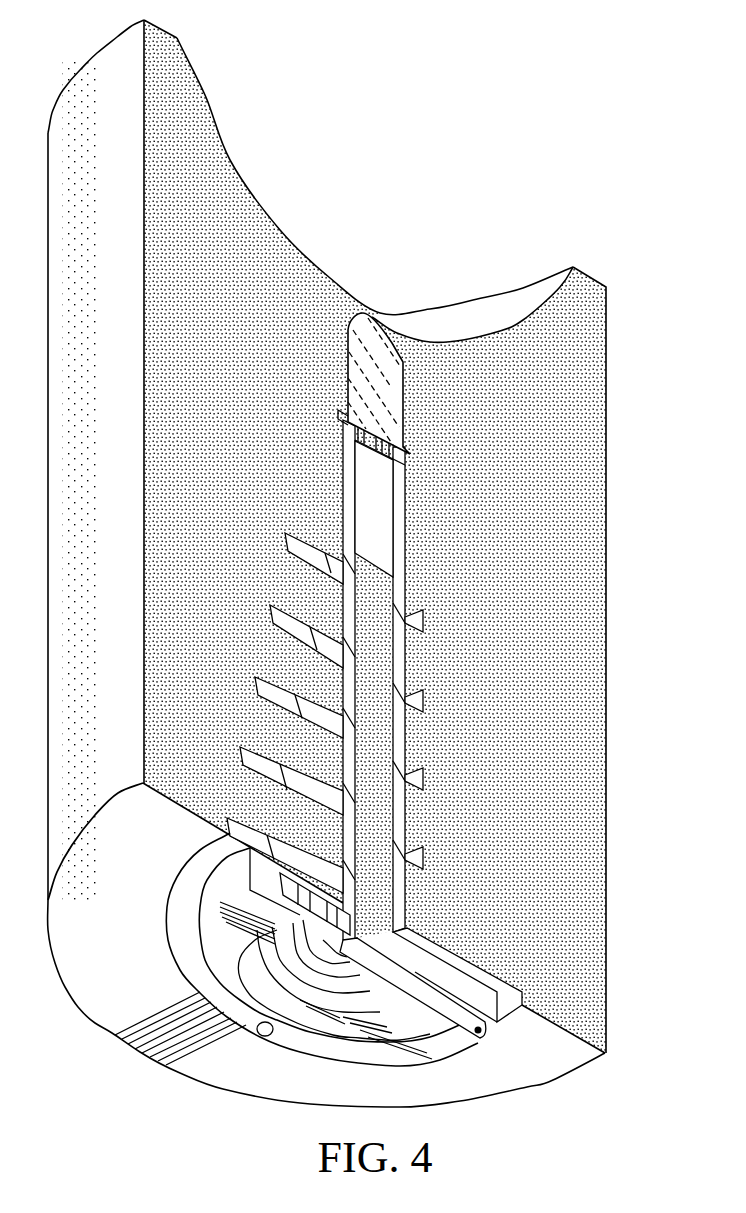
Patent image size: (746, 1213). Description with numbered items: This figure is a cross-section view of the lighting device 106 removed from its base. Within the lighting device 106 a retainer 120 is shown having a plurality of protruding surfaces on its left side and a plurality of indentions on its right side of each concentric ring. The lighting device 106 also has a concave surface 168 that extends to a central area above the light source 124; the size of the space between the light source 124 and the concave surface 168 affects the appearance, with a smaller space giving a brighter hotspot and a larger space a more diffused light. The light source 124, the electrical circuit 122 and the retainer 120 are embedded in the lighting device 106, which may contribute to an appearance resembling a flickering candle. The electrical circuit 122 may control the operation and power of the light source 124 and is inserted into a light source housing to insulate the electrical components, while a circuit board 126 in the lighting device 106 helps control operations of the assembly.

The lighting device 106 is at (614, 672).
The concave surface 168 is at (457, 315).
The light source 124 is at (372, 314).
The electrical circuit 122 is at (363, 503).
The retainer 120 is at (412, 606).
The circuit board 126 is at (456, 1043).